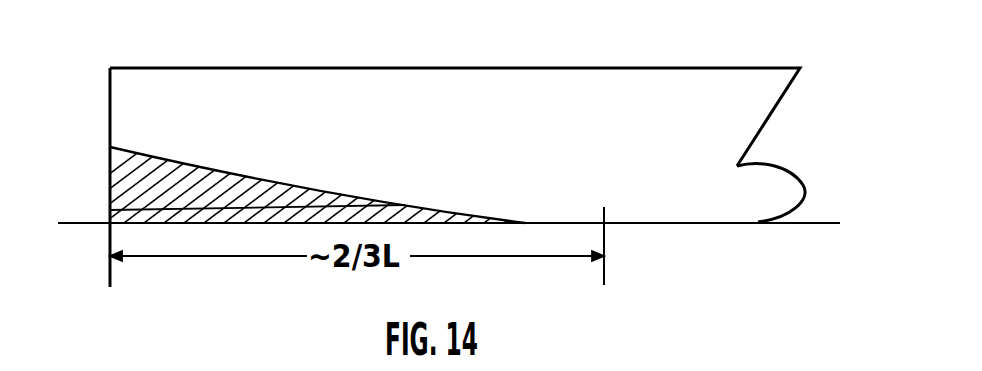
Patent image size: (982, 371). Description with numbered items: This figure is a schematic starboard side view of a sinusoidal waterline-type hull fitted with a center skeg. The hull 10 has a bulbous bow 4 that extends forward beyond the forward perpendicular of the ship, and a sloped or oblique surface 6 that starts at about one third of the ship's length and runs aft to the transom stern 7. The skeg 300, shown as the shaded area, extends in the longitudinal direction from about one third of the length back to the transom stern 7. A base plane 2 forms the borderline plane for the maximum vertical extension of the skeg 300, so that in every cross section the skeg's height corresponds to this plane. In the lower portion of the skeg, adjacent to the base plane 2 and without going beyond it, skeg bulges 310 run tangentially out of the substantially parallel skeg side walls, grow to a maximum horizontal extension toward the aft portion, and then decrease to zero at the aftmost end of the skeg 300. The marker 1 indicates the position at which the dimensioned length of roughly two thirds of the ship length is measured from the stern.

The substrate / plate 10 is at (632, 78).
The transom stern 7 is at (110, 130).
The base plane 2 is at (705, 224).
The bulbous bow 4 is at (777, 185).
The sloped or oblique surface 6 is at (202, 166).
The skeg 300 is at (127, 165).
The skeg bulges 310 is at (127, 220).
The position marker 1 is at (604, 264).